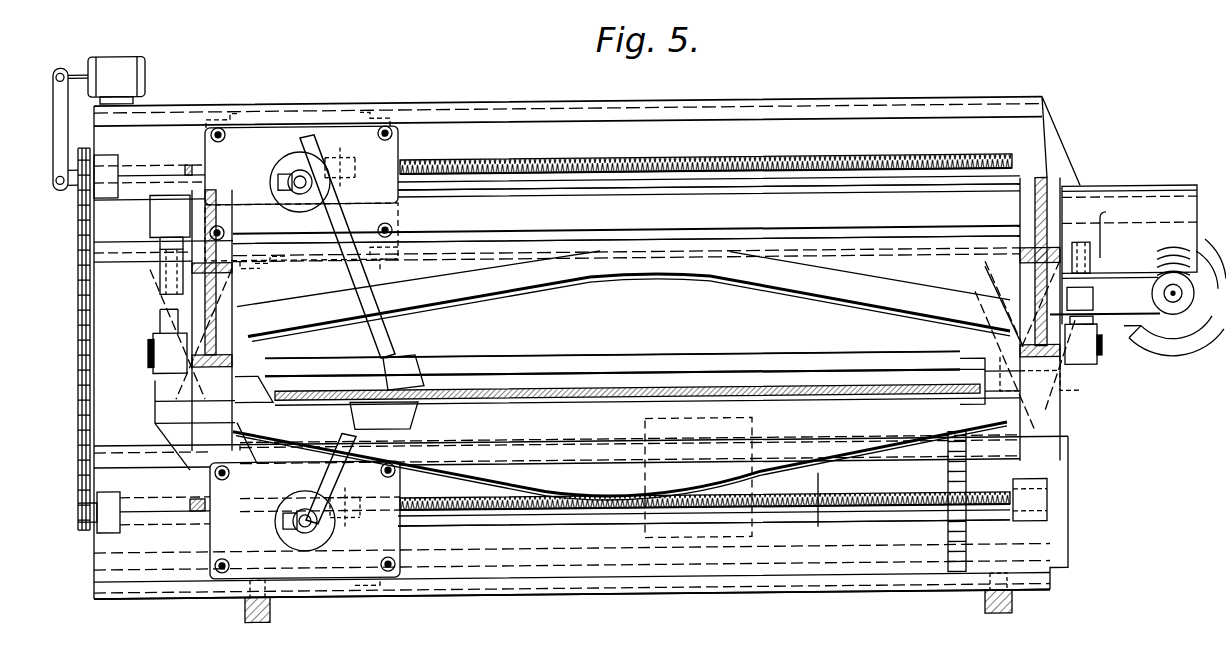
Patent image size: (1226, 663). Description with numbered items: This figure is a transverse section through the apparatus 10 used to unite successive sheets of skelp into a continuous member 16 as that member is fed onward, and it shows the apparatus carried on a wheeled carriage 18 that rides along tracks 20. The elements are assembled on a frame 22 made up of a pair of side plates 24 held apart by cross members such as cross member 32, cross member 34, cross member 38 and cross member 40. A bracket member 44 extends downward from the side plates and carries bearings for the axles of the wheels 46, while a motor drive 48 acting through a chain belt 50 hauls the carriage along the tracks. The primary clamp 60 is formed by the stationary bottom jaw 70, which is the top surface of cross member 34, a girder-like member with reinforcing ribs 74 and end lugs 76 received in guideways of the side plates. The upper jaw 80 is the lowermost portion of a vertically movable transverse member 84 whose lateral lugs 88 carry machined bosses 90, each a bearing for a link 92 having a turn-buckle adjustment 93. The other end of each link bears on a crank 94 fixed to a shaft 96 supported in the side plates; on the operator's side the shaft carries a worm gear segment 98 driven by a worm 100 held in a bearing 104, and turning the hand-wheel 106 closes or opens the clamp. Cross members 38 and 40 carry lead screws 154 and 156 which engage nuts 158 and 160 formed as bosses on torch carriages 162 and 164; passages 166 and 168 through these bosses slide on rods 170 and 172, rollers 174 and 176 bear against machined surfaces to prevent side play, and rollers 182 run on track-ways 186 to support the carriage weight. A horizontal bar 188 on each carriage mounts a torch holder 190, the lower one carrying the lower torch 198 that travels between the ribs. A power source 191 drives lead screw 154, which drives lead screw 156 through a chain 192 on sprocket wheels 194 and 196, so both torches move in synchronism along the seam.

The apparatus 10 is at (845, 100).
The continuous member 16 is at (815, 409).
The wheeled carriage 18 is at (168, 549).
The tracks 20 is at (245, 619).
The frame 22 is at (1071, 447).
The side plates 24 is at (192, 173).
The cross member 32 is at (629, 306).
The cross member 34 is at (492, 504).
The cross member 38 is at (770, 110).
The cross member 40 is at (765, 607).
The bracket member 44 is at (186, 491).
The wheels 46 is at (273, 607).
The motor drive 48 is at (752, 430).
The chain belt 50 is at (946, 536).
The primary clamp 60 is at (819, 494).
The stationary bottom jaw 70 is at (586, 409).
The reinforcing ribs 74 is at (530, 509).
The lugs 76 is at (160, 436).
The upper jaw 80 is at (660, 380).
The transverse member 84 is at (745, 372).
The lugs 88 is at (280, 309).
The machined bosses 90 is at (153, 352).
The link 92 is at (150, 380).
The turn-buckle adjustment 93 is at (160, 300).
The crank 94 is at (150, 219).
The shaft 96 is at (709, 206).
The worm gear segment 98 is at (1122, 271).
The worm 100 is at (1192, 363).
The bearing 104 is at (1203, 350).
The hand-wheel 106 is at (1166, 352).
The lead screw 154 is at (186, 166).
The lead screw 156 is at (591, 521).
The nut 158 is at (398, 142).
The nut 160 is at (339, 546).
The torch carriage 162 is at (277, 163).
The torch carriage 164 is at (283, 507).
The passage 166 is at (342, 150).
The passage 168 is at (356, 497).
The rod 170 is at (551, 198).
The rod 172 is at (545, 534).
The rollers 174 is at (230, 116).
The rollers 176 is at (402, 612).
The rollers 182 is at (393, 236).
The track-ways 186 is at (804, 248).
The horizontal bar 188 is at (290, 210).
The torch holder 190 is at (329, 207).
The power source 191 is at (118, 60).
The chain 192 is at (72, 304).
The sprocket wheel 194 is at (88, 150).
The sprocket wheel 196 is at (84, 535).
The lower torch 198 is at (340, 462).